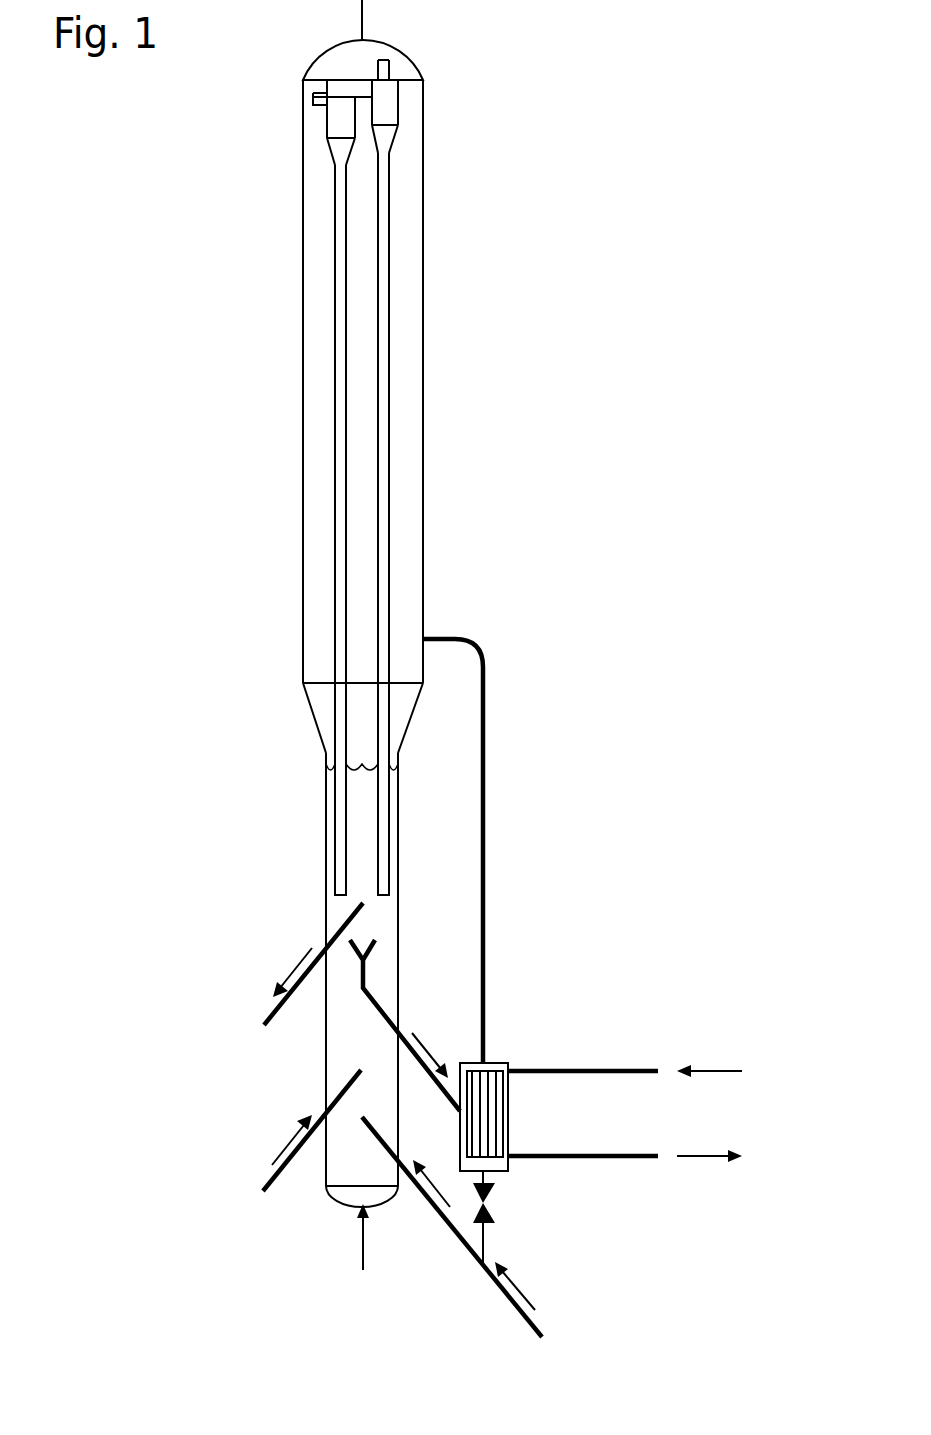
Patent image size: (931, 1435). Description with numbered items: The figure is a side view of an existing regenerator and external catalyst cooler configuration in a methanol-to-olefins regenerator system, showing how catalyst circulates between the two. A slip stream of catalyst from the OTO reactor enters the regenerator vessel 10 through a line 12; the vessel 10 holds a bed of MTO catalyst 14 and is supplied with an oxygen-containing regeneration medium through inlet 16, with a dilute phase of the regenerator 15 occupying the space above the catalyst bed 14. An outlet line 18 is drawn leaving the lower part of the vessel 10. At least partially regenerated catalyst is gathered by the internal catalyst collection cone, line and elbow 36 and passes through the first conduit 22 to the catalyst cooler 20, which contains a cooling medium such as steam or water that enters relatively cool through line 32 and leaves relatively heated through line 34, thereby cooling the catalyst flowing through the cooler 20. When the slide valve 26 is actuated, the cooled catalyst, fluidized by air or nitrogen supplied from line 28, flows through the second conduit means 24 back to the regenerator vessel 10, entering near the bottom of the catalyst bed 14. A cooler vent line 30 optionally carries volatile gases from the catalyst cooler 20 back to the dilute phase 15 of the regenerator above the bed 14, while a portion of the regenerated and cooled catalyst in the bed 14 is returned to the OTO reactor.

The regenerator vessel 10 is at (226, 456).
The line 12 is at (295, 1137).
The bed of MTO catalyst 14 is at (303, 850).
The dilute phase of the regenerator 15 is at (435, 402).
The oxygen-containing regeneration medium inlet 16 is at (362, 1246).
The spent catalyst outlet line 18 is at (290, 973).
The catalyst cooler 20 is at (501, 1048).
The first conduit 22 is at (433, 1045).
The second conduit means 24 is at (442, 1210).
The slide valve 26 is at (502, 1213).
The fluidization medium line 28 is at (520, 1300).
The cooler vent line 30 is at (486, 792).
The cooling medium inlet line 32 is at (714, 1068).
The cooling medium outlet line 34 is at (714, 1154).
The internal catalyst collection cone, line, and elbow 36 is at (380, 988).